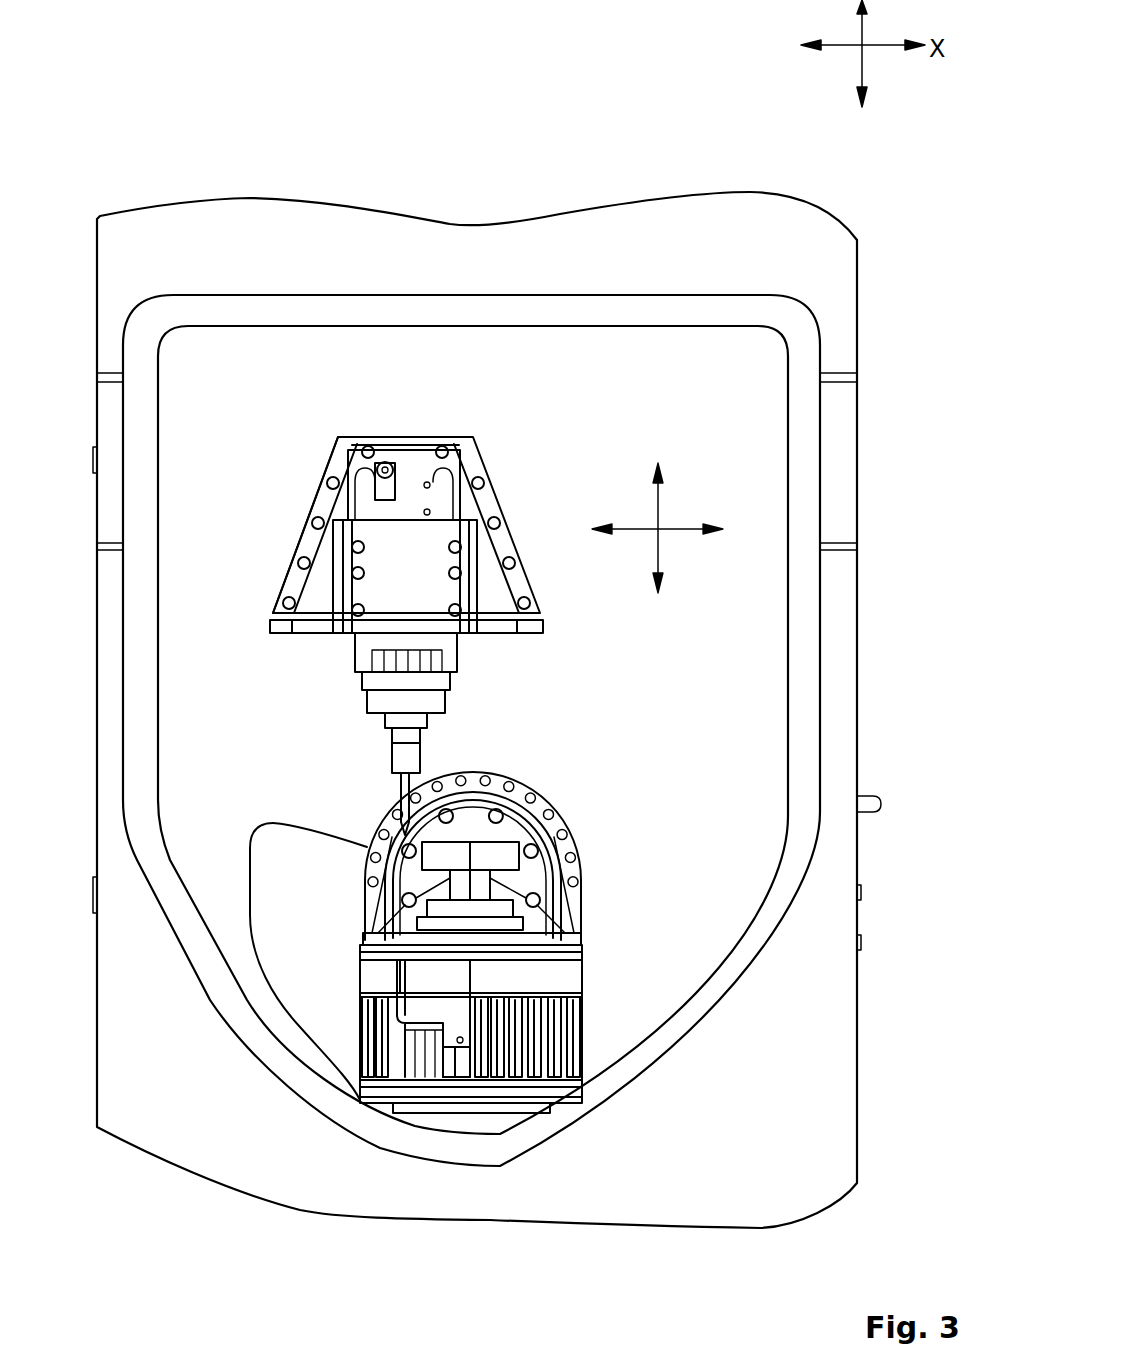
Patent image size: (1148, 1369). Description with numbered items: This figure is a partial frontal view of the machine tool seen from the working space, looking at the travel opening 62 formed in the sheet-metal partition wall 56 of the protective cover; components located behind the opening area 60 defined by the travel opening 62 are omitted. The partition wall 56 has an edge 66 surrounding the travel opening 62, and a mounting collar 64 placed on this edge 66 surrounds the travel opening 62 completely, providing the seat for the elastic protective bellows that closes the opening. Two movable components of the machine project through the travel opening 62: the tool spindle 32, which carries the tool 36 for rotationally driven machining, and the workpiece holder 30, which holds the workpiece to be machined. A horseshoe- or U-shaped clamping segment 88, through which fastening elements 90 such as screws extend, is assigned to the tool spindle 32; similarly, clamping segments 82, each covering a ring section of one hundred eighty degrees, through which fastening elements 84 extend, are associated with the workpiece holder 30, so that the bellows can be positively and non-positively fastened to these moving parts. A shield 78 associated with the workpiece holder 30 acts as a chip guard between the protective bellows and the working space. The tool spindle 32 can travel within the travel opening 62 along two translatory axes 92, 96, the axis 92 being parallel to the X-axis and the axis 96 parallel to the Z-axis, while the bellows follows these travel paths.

The workpiece holder 30 is at (500, 898).
The tool spindle 32 is at (400, 602).
The tool 36 is at (393, 782).
The partition wall 56 is at (722, 243).
The opening area 60 is at (654, 680).
The travel opening 62 is at (536, 389).
The mounting collar 64 is at (373, 300).
The edge 66 is at (433, 327).
The shield 78 is at (317, 963).
The clamping segment 82 is at (575, 855).
The fastening elements 84 is at (540, 817).
The clamping segment 88 is at (318, 492).
The fastening elements 90 is at (371, 447).
The translatory axis 92 is at (687, 528).
The translatory axis 96 is at (658, 497).